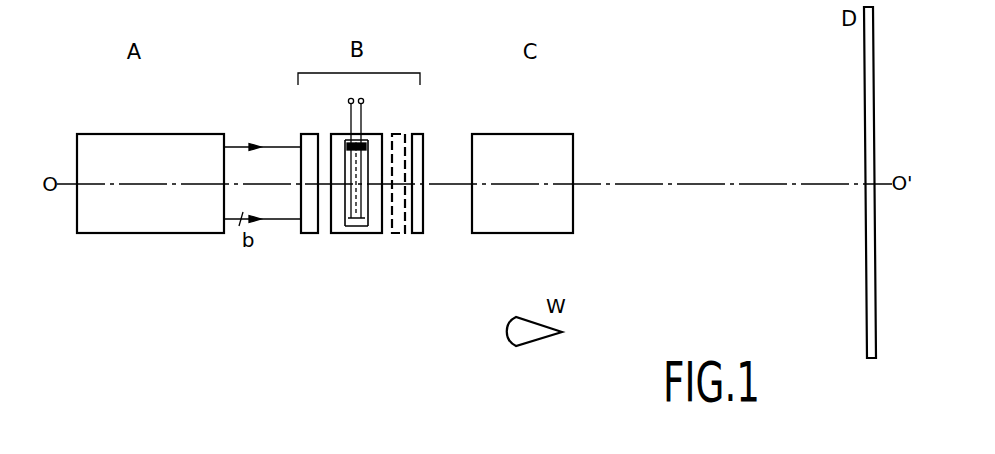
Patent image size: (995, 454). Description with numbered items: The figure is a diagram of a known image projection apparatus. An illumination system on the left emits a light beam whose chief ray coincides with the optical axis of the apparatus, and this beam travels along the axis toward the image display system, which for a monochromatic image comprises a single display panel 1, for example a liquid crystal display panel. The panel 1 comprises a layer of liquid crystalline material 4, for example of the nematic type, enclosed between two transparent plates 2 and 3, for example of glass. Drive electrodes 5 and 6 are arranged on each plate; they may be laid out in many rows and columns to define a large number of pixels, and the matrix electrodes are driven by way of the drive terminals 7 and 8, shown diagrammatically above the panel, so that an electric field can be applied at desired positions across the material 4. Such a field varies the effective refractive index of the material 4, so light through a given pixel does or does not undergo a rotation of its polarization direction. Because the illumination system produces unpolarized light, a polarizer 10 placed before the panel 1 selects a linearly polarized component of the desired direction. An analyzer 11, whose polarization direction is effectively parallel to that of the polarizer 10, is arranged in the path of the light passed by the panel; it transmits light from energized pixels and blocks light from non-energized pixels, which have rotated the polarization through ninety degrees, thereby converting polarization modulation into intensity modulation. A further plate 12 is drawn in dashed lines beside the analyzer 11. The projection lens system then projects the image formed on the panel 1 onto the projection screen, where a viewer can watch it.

The display panel 1 is at (333, 278).
The transparent plate 2 is at (342, 234).
The transparent plate 3 is at (373, 234).
The layer of liquid crystalline material 4 is at (357, 234).
The drive electrode 5 is at (338, 153).
The drive electrode 6 is at (374, 153).
The drive terminal 7 is at (348, 101).
The drive terminal 8 is at (364, 101).
The polarizer 10 is at (309, 234).
The analyzer 11 is at (420, 234).
The compensating plate 12 is at (401, 235).